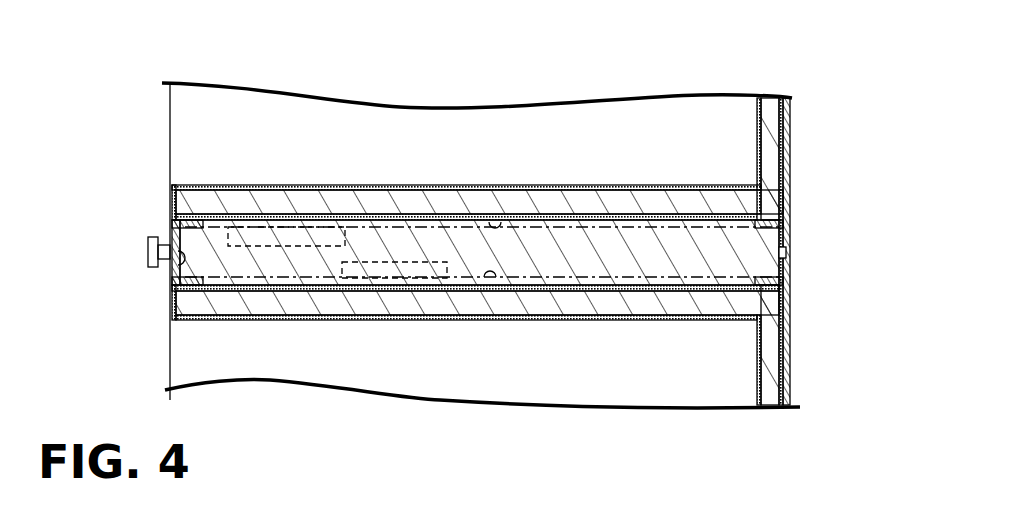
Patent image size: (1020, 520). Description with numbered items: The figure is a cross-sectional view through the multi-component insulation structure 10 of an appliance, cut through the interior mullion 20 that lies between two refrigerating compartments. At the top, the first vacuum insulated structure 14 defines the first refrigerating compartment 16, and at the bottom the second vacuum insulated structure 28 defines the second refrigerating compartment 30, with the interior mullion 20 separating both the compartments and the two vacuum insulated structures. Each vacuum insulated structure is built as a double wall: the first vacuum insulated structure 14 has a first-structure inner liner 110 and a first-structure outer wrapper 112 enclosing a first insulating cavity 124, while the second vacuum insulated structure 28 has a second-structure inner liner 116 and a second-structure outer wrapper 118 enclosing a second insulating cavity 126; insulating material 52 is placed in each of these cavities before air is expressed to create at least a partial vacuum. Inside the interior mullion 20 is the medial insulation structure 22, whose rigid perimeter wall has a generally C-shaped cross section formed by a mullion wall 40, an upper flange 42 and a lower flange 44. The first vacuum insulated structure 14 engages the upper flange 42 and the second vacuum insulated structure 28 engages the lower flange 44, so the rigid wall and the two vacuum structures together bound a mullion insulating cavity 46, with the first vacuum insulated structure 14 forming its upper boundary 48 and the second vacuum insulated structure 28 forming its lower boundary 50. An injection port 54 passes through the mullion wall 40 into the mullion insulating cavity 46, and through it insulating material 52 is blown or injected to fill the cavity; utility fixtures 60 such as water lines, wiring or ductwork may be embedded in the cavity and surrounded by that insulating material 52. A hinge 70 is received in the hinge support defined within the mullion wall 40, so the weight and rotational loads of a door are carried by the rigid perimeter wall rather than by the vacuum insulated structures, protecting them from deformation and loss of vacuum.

The multi-component insulation structure 10 is at (809, 164).
The first vacuum insulated structure 14 is at (571, 95).
The first refrigerating compartment 16 is at (405, 136).
The interior mullion 20 is at (419, 294).
The medial insulation structure 22 is at (801, 272).
The second vacuum insulated structure 28 is at (624, 416).
The second refrigerating compartment 30 is at (705, 352).
The mullion wall 40 is at (184, 259).
The upper flange 42 is at (178, 206).
The lower flange 44 is at (779, 318).
The mullion insulating cavity 46 is at (590, 244).
The upper boundary 48 is at (498, 221).
The lower boundary 50 is at (497, 276).
The insulating material 52 is at (255, 205).
The injection port 54 is at (790, 251).
The utility fixtures 60 is at (345, 283).
The hinge 70 is at (148, 253).
The first-structure inner liner 110 is at (215, 185).
The first-structure outer wrapper 112 is at (790, 122).
The second-structure inner liner 116 is at (208, 321).
The second-structure outer wrapper 118 is at (790, 382).
The first insulating cavity 124 is at (310, 186).
The second insulating cavity 126 is at (462, 320).